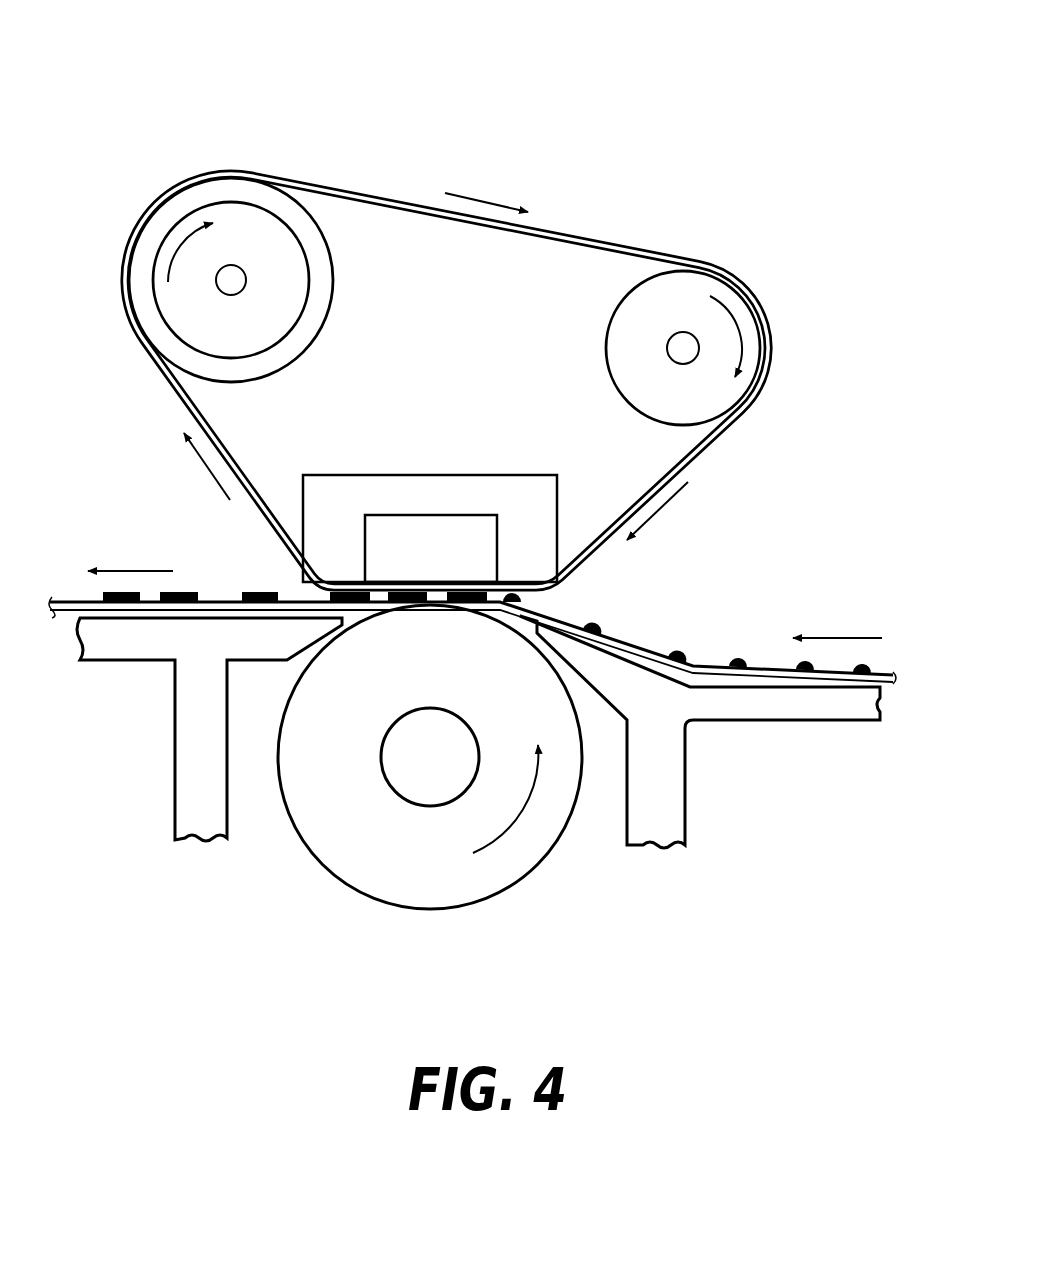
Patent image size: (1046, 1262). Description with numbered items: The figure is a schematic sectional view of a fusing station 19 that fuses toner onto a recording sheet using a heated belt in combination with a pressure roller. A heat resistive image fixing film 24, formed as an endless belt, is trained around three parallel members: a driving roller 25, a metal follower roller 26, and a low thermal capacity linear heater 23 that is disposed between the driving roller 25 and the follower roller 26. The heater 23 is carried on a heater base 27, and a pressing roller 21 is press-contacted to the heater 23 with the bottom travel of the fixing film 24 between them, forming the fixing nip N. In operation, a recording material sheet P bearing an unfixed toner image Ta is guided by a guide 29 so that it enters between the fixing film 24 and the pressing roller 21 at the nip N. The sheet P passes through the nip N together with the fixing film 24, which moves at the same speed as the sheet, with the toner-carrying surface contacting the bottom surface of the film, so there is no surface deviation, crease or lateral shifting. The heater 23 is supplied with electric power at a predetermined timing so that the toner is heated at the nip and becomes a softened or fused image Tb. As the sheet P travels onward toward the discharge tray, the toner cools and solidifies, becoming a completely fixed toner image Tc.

The fusing station 19 is at (112, 86).
The pressing roller 21 is at (533, 855).
The low thermal capacity linear heater 23 is at (383, 522).
The image fixing film 24 is at (308, 182).
The driving roller 25 is at (248, 228).
The follower roller 26 is at (683, 295).
The heater base 27 is at (532, 487).
The guide 29 is at (735, 708).
The recording material sheet P is at (62, 598).
The unfixed toner image Ta is at (737, 656).
The softened or fused image Tb is at (395, 601).
The fixed toner image Tc is at (178, 601).
The nip N is at (474, 618).